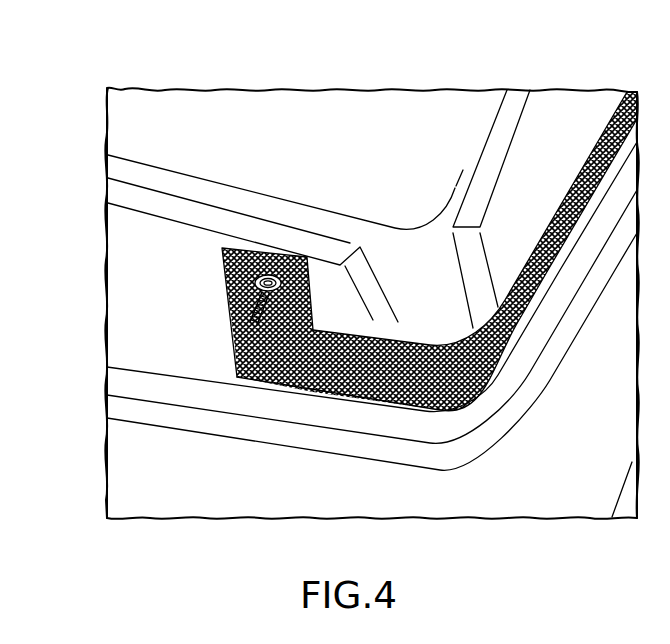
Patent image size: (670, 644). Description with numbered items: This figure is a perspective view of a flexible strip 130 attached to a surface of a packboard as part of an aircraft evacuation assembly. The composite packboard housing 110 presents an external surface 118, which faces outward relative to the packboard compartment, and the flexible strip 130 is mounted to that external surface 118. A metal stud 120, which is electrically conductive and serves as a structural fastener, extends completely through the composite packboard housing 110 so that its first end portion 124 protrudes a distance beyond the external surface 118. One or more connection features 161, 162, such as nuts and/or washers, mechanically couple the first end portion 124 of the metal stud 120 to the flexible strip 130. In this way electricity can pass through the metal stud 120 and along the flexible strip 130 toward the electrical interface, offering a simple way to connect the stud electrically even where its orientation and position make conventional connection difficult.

The composite packboard housing 110 is at (254, 114).
The external surface 118 is at (128, 318).
The metal stud 120 is at (233, 301).
The first end portion 124 is at (258, 312).
The flexible strip 130 is at (503, 320).
The connection feature 161 is at (280, 286).
The connection feature 162 is at (276, 288).